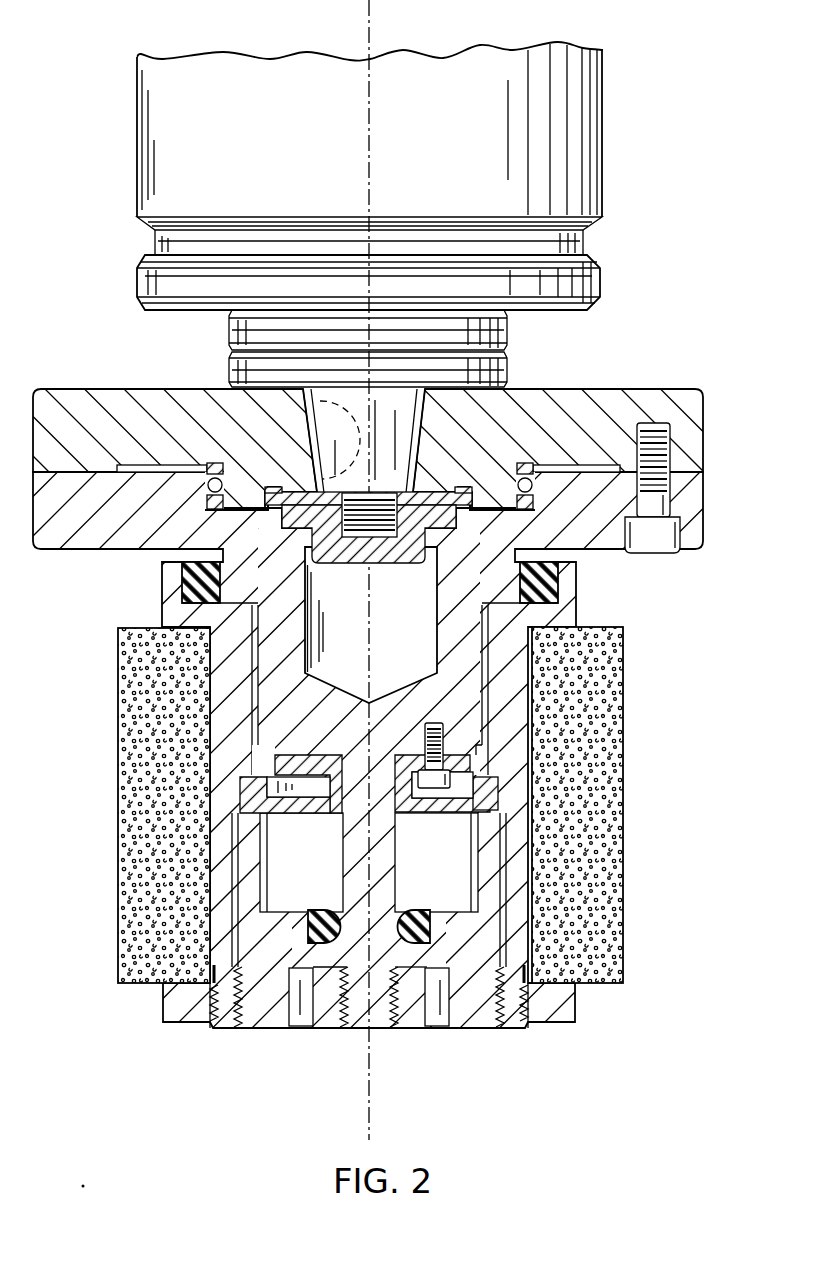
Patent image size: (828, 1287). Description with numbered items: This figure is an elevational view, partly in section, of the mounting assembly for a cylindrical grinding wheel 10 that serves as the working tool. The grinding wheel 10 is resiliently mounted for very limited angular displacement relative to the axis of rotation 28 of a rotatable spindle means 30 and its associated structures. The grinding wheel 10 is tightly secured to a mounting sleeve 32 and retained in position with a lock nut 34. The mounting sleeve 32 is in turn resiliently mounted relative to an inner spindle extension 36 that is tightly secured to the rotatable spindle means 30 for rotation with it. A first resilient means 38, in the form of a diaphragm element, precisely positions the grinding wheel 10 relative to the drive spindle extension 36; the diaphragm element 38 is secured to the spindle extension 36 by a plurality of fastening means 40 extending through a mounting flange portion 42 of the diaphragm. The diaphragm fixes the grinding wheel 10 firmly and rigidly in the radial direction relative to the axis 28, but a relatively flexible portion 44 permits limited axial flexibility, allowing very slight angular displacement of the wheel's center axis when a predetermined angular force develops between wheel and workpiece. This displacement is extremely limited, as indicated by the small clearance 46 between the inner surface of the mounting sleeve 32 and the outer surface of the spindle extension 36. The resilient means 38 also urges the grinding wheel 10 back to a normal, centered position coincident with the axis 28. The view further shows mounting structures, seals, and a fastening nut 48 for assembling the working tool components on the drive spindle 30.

The cylindrical grinding wheel 10 is at (122, 880).
The axis of rotation 28 is at (372, 1098).
The rotatable spindle means 30 is at (604, 292).
The mounting sleeve 32 is at (523, 890).
The lock nut 34 is at (553, 1023).
The inner spindle extension 36 is at (313, 688).
The first resilient means 38 is at (410, 811).
The fastening means 40 is at (425, 735).
The mounting flange portion 42 is at (297, 755).
The relatively flexible portion 44 is at (290, 808).
The clearance 46 is at (492, 628).
The fastening nut 48 is at (323, 1028).